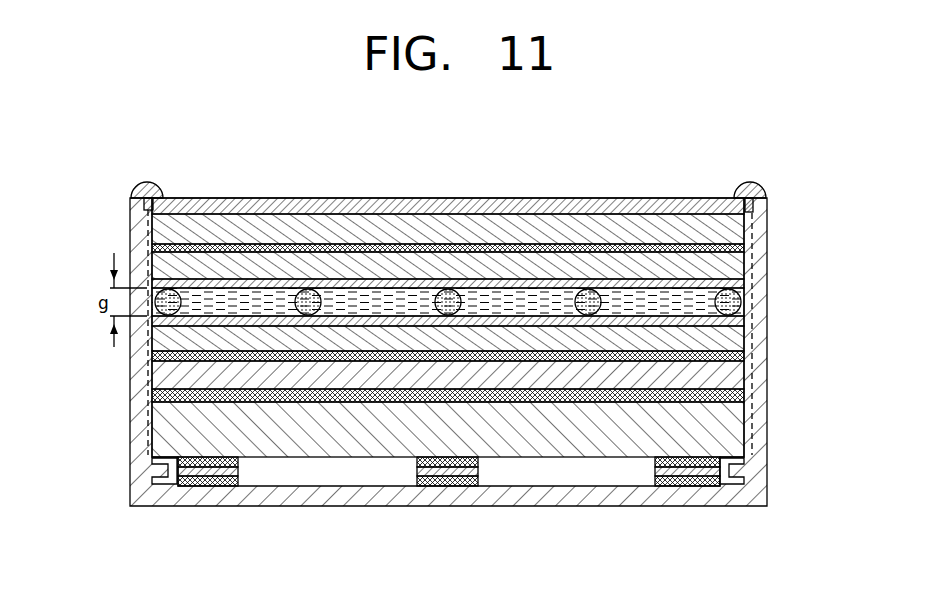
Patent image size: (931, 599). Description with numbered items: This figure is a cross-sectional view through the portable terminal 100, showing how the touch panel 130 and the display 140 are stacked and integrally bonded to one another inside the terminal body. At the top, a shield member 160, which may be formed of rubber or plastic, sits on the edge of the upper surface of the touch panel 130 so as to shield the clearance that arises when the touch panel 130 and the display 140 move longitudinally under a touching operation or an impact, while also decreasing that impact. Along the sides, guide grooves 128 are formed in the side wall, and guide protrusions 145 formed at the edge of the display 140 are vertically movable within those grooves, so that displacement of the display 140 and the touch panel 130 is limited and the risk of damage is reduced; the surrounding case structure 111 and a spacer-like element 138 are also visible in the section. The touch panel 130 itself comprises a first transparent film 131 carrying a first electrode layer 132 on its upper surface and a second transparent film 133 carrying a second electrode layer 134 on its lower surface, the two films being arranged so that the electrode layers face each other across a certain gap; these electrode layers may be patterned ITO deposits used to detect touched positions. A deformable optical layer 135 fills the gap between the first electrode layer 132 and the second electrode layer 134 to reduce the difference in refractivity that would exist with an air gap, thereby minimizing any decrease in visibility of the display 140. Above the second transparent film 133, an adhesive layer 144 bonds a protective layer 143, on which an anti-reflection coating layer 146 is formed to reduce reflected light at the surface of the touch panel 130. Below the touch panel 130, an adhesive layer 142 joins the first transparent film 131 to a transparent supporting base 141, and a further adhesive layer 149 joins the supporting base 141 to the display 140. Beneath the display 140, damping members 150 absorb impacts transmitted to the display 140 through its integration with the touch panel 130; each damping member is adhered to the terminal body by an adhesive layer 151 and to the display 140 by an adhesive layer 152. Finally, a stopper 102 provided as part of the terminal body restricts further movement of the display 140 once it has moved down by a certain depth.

The portable terminal 100 is at (117, 158).
The stopper 102 is at (160, 470).
The case 111 is at (140, 402).
The guide grooves 128 is at (148, 242).
The touch panel 130 is at (517, 243).
The first transparent film 131 is at (494, 338).
The first electrode layer 132 is at (744, 320).
The second transparent film 133 is at (744, 266).
The second electrode layer 134 is at (744, 284).
The deformable optical layer 135 is at (513, 297).
The spacer 138 is at (449, 295).
The display 140 is at (744, 422).
The transparent supporting base 141 is at (744, 378).
The adhesive layer 142 is at (744, 356).
The protective layer 143 is at (585, 227).
The adhesive layer 144 is at (744, 247).
The guide protrusions 145 is at (752, 447).
The anti-reflection coating layer 146 is at (372, 208).
The adhesive layer 149 is at (744, 398).
The damping members 150 is at (430, 478).
The adhesive layer 151 is at (445, 468).
The adhesive layer 152 is at (462, 462).
The shield member 160 is at (147, 187).